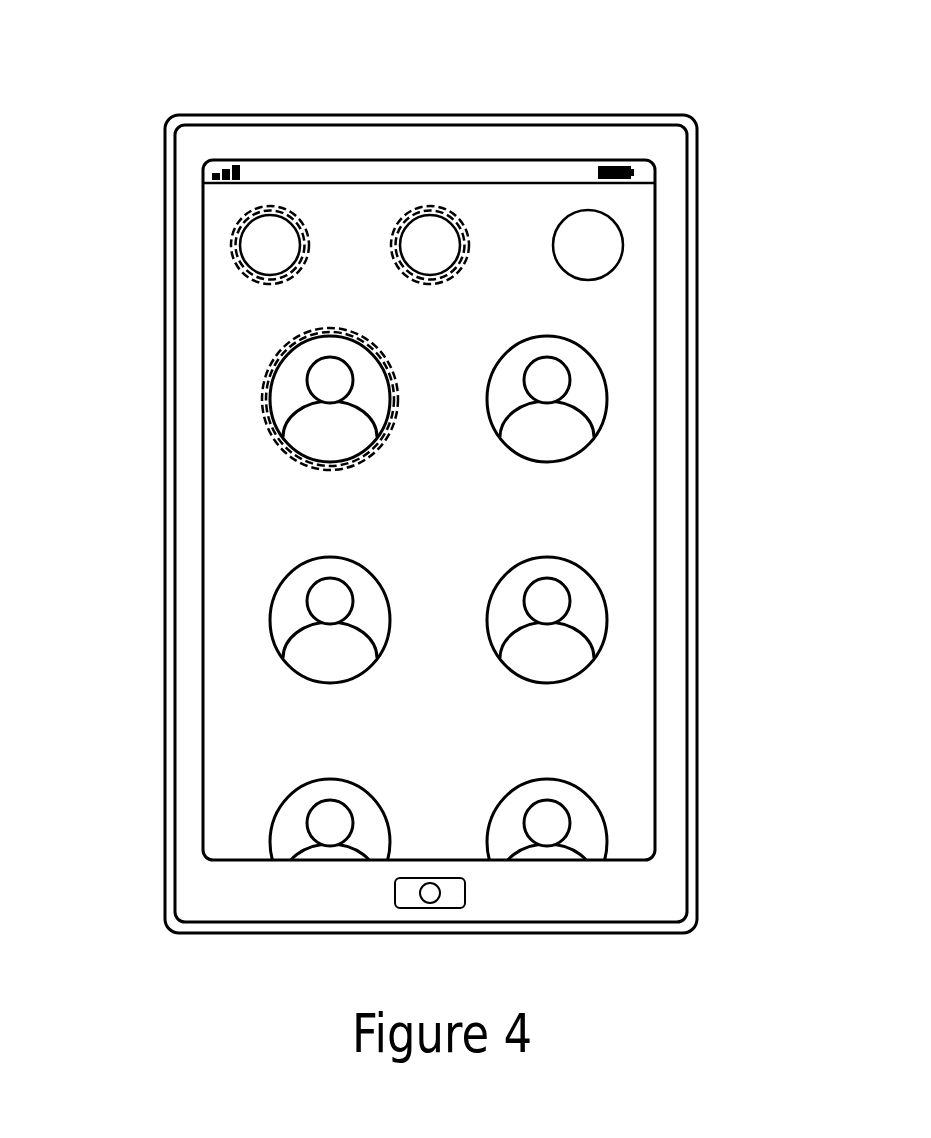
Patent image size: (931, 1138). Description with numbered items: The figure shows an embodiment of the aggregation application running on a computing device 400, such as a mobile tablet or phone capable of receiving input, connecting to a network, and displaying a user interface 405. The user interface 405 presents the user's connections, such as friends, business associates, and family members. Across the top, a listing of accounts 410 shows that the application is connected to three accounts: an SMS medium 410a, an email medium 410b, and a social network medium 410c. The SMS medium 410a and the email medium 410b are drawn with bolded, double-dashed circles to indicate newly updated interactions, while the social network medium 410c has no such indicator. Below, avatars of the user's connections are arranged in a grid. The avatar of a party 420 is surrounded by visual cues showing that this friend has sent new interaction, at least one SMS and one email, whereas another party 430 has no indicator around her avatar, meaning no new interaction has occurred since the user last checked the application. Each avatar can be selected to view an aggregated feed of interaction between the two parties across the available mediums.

The computing device 400 is at (202, 115).
The user interface 405 is at (528, 140).
The listing of accounts 410 is at (507, 159).
The SMS medium 410a is at (293, 195).
The email medium 410b is at (438, 195).
The social network medium 410c is at (583, 195).
The party 420 is at (262, 403).
The party 430 is at (613, 387).